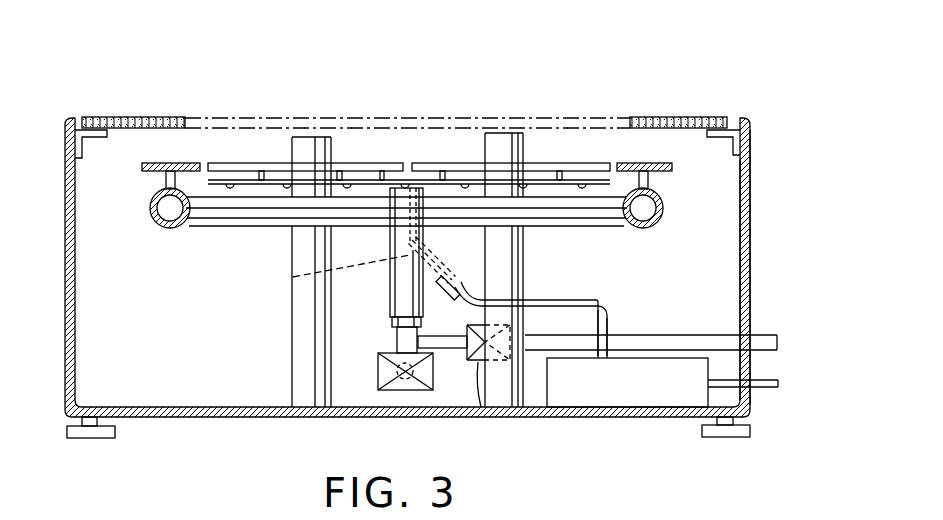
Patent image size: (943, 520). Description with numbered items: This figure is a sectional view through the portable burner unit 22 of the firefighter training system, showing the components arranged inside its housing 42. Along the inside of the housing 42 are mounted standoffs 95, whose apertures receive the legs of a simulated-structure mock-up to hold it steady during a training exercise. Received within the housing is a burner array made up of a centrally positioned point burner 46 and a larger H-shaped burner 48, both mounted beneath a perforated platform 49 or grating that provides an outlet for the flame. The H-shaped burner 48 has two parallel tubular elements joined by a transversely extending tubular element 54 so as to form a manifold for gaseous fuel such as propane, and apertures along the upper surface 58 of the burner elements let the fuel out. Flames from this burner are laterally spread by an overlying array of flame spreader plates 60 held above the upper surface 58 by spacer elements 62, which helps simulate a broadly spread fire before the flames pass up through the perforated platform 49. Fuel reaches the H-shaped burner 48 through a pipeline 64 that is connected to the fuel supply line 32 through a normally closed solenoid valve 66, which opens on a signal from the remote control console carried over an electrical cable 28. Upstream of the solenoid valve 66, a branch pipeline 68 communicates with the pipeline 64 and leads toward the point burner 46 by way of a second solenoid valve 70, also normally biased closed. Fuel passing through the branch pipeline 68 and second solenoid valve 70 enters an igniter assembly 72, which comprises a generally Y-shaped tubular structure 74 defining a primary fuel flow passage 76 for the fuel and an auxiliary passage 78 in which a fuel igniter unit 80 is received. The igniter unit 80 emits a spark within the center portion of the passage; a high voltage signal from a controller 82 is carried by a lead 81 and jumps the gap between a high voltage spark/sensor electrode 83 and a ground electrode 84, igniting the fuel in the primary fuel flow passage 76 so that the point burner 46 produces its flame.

The portable burner unit 22 is at (757, 206).
The electrical cable 28 is at (772, 390).
The fuel supply line 32 is at (777, 342).
The housing 42 is at (752, 232).
The point burner 46 is at (376, 167).
The H-shaped burner 48 is at (150, 201).
The perforated platform 49 is at (620, 117).
The transversely extending tubular element 54 is at (192, 228).
The upper surface 58 is at (243, 185).
The flame spreader plates 60 is at (230, 163).
The spacer elements 62 is at (268, 179).
The pipeline 64 is at (397, 334).
The solenoid valve assembly 66 is at (378, 368).
The branch pipeline 68 is at (449, 350).
The second solenoid valve 70 is at (481, 408).
The igniter assembly 72 is at (429, 229).
The Y-shaped tubular structure 74 is at (391, 276).
The primary fuel flow passage 76 is at (403, 259).
The auxiliary passage 78 is at (459, 277).
The fuel igniter unit 80 is at (413, 290).
The lead 81 is at (609, 301).
The controller 82 is at (627, 382).
The high voltage spark/sensor electrode 83 is at (296, 277).
The ground electrode 84 is at (415, 187).
The standoffs 95 is at (524, 265).